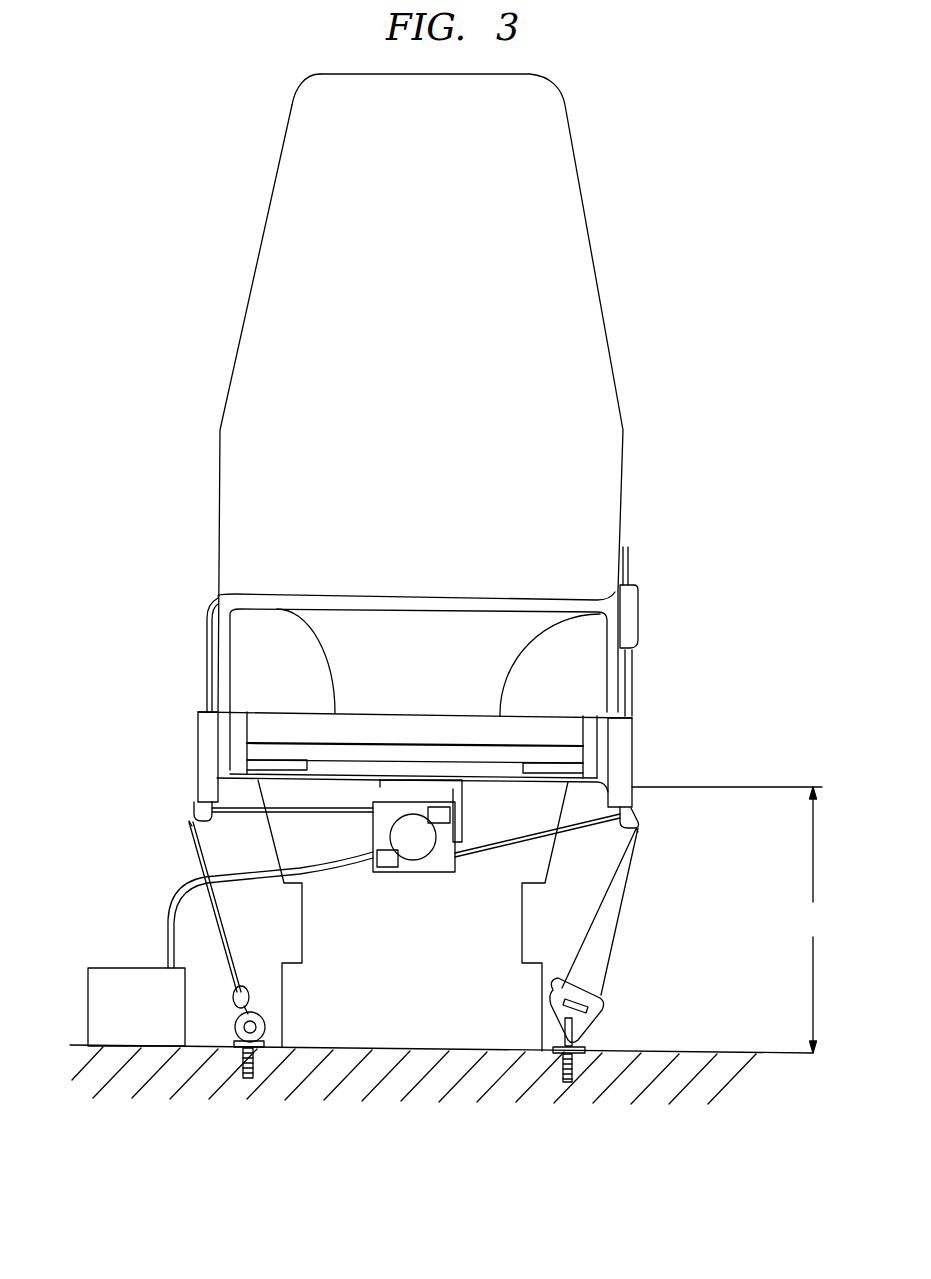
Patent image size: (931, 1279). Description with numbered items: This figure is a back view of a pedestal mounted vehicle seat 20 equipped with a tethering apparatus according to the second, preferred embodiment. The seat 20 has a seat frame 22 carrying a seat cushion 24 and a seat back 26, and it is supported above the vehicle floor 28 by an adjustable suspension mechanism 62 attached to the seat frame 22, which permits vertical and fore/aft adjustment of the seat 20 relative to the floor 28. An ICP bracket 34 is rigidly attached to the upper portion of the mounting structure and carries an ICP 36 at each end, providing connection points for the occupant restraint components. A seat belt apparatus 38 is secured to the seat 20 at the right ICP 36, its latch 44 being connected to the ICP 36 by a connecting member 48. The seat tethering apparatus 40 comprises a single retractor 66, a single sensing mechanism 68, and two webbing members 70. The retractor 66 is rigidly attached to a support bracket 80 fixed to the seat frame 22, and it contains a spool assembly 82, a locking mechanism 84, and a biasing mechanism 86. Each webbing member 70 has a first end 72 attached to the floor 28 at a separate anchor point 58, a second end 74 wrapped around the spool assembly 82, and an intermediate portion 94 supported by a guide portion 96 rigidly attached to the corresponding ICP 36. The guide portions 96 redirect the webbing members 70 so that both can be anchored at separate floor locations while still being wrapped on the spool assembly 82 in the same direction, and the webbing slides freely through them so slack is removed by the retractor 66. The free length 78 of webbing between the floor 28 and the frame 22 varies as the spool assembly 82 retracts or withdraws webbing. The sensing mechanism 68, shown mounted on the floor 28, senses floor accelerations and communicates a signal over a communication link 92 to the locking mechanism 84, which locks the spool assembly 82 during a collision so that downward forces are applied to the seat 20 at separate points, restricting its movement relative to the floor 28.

The vehicle seat 20 is at (213, 336).
The seat frame 22 is at (383, 716).
The seat cushion 24 is at (335, 605).
The seat back 26 is at (272, 190).
The vehicle floor 28 is at (713, 1052).
The ICP bracket 34 is at (268, 775).
The ICP 36 is at (197, 748).
The seat belt apparatus 38 is at (697, 722).
The seat tethering apparatus 40 is at (712, 840).
The latch 44 is at (640, 608).
The connecting member 48 is at (630, 676).
The anchor point 58 is at (268, 1030).
The adjustable suspension mechanism 62 is at (541, 925).
The retractor 66 is at (366, 833).
The sensing mechanism 68 is at (88, 1010).
The webbing member 70 is at (204, 856).
The first end 72 is at (238, 956).
The second end 74 is at (376, 805).
The free length 78 is at (732, 920).
The support bracket 80 is at (463, 794).
The spool assembly 82 is at (427, 850).
The locking mechanism 84 is at (447, 802).
The biasing mechanism 86 is at (386, 868).
The communication link 92 is at (167, 932).
The intermediate portion 94 is at (192, 826).
The guide portion 96 is at (194, 808).